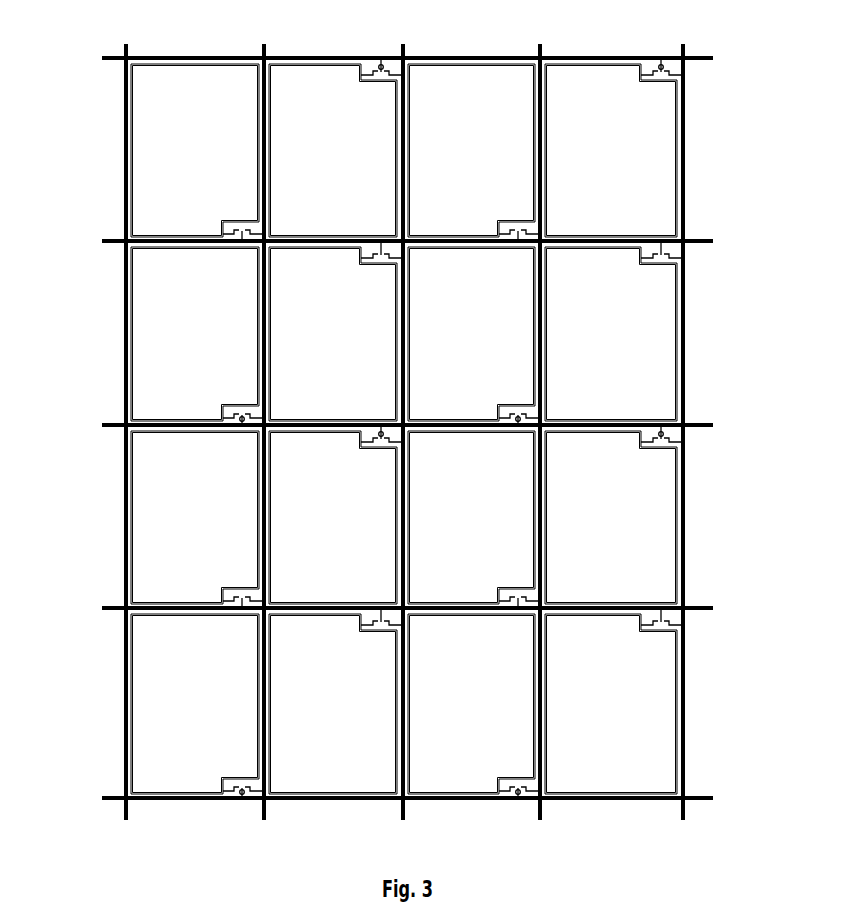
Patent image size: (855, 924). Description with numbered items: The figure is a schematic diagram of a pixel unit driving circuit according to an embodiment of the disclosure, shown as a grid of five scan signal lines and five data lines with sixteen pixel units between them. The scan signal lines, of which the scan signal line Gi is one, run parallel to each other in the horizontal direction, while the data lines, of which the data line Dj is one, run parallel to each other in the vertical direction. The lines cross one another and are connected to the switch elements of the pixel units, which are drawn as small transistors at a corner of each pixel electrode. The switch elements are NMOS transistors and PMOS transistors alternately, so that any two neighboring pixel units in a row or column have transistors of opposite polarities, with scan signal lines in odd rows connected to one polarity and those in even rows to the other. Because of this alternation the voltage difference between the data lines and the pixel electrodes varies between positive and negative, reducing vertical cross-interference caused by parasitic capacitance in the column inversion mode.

The scan signal line Gi is at (380, 60).
The data line Dj is at (124, 414).